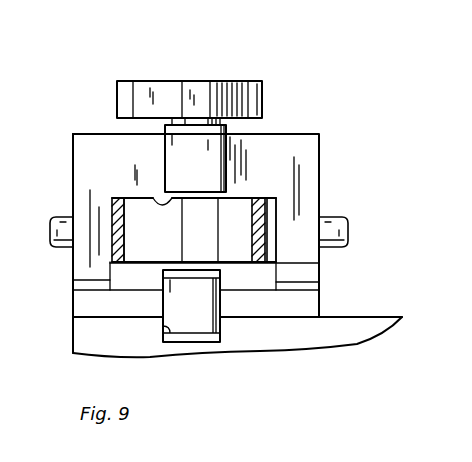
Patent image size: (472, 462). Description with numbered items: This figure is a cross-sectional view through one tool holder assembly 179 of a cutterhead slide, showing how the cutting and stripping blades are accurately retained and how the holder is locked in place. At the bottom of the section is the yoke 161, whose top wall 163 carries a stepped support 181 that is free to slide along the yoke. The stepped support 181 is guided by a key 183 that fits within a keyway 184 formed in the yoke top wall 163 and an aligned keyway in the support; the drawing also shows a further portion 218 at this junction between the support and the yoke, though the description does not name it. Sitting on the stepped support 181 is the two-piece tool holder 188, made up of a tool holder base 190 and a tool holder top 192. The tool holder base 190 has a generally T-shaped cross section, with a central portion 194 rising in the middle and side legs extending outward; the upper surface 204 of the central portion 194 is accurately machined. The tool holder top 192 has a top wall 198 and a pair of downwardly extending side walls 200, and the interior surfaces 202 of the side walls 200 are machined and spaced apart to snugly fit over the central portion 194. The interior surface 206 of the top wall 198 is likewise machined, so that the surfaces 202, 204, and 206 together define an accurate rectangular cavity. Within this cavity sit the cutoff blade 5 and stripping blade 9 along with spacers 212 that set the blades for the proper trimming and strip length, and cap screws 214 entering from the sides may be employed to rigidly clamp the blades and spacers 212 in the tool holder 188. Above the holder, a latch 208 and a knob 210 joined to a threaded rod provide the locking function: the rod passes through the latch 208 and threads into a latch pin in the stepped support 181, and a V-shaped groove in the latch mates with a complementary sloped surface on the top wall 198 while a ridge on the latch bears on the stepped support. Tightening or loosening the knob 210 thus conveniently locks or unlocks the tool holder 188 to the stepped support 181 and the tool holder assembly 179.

The tool holder assembly 179 is at (310, 78).
The tool holder 188 is at (326, 145).
The yoke 161 is at (387, 304).
The knob 210 is at (241, 87).
The top wall 198 is at (259, 143).
The tool holder top 192 is at (83, 143).
The latch 208 is at (173, 145).
The interior surface 206 is at (173, 206).
The cutoff blade 5 is at (261, 198).
The stripping blade 9 is at (115, 200).
The spacers 212 is at (228, 229).
The interior surfaces 202 is at (117, 212).
The upper surface 204 is at (143, 230).
The cap screws 214 is at (50, 222).
The side walls 200 is at (85, 248).
The tool holder base 190 is at (80, 284).
The lower boss 218 is at (205, 268).
The keyway 184 is at (163, 326).
The key 183 is at (210, 317).
The central portion 194 is at (261, 273).
The stepped support 181 is at (311, 303).
The top wall 163 is at (369, 322).